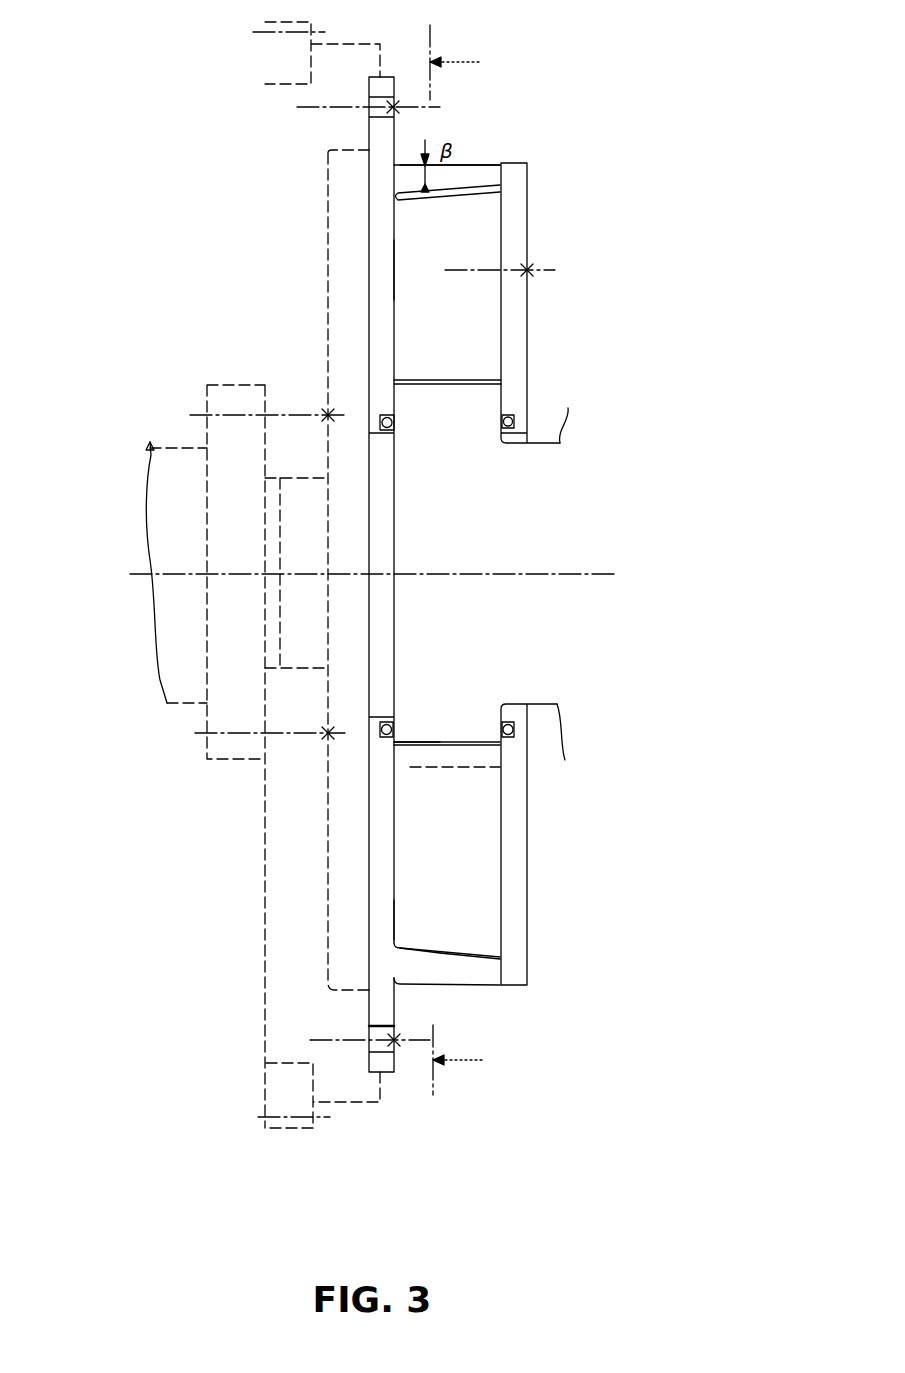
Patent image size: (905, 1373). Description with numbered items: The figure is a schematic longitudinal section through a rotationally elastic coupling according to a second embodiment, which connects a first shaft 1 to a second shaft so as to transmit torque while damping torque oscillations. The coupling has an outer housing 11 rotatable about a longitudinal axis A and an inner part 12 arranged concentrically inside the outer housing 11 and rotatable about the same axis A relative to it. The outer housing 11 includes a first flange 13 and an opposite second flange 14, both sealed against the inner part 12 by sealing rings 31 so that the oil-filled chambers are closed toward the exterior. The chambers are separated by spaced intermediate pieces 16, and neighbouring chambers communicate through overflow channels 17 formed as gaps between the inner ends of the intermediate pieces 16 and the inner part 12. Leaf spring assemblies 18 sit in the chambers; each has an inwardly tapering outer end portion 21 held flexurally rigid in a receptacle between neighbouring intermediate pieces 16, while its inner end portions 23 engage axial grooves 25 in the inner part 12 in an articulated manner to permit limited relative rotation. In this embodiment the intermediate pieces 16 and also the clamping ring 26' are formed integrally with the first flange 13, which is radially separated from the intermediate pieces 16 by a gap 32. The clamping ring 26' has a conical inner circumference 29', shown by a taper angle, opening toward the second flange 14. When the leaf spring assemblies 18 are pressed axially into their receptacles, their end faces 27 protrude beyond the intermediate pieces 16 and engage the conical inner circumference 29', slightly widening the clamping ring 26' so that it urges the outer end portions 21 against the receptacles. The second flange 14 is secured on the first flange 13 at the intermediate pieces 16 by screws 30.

The first shaft 1 is at (187, 462).
The longitudinal axis A is at (175, 575).
The outer housing 11 is at (379, 237).
The inner part 12 is at (455, 470).
The first flange 13 is at (381, 277).
The second flange 14 is at (510, 200).
The intermediate pieces 16 is at (418, 323).
The overflow channels 17 is at (478, 380).
The leaf spring assemblies 18 is at (463, 827).
The outer end portion 21 is at (417, 923).
The inner end portions 23 is at (418, 760).
The axial grooves 25 is at (410, 745).
The clamping ring 26' is at (542, 531).
The end faces 27 is at (470, 956).
The conical inner circumference 29' is at (475, 1023).
The screws 30 is at (527, 270).
The sealing rings 31 is at (512, 728).
The gap 32 is at (458, 193).